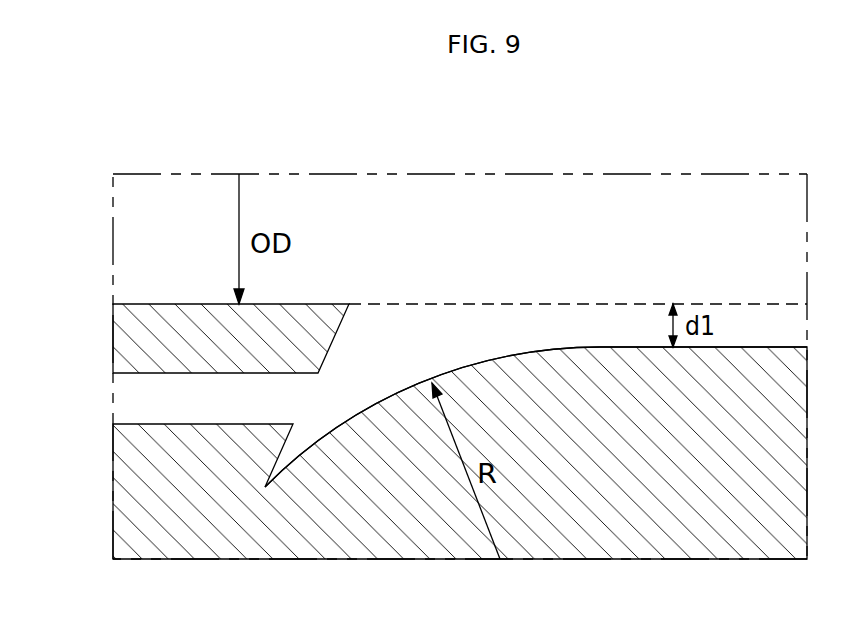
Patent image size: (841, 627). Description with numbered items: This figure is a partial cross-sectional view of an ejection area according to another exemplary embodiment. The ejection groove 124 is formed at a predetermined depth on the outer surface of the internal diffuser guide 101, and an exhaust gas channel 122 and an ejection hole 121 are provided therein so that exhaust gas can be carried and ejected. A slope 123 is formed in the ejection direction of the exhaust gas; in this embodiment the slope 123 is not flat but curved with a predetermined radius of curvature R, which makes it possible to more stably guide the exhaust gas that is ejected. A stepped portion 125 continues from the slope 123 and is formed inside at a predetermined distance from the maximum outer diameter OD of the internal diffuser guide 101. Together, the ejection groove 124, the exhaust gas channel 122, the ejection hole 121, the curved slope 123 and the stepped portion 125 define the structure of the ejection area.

The internal diffuser guide 101 is at (170, 304).
The ejection hole 121 is at (284, 402).
The exhaust gas channel 122 is at (133, 413).
The slope 123 is at (364, 407).
The ejection groove 124 is at (442, 350).
The stepped portion 125 is at (772, 346).